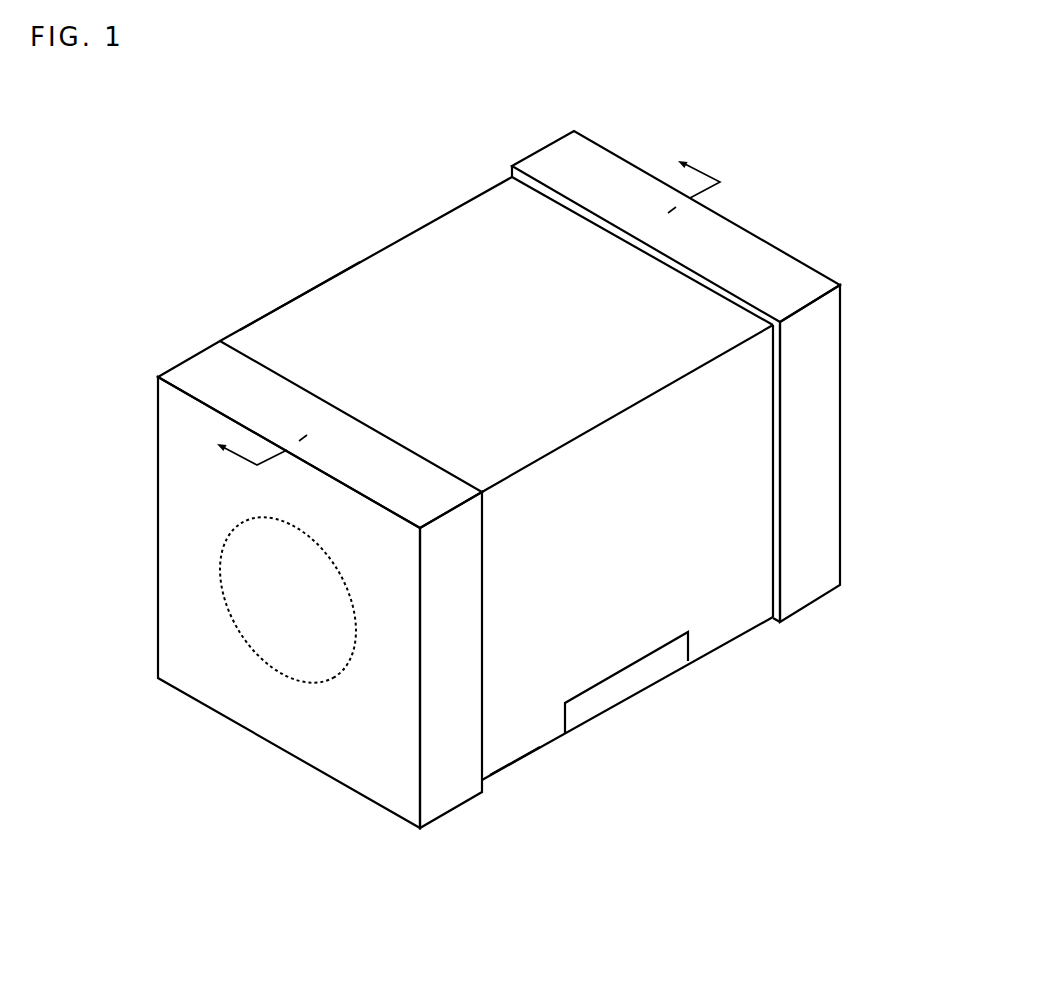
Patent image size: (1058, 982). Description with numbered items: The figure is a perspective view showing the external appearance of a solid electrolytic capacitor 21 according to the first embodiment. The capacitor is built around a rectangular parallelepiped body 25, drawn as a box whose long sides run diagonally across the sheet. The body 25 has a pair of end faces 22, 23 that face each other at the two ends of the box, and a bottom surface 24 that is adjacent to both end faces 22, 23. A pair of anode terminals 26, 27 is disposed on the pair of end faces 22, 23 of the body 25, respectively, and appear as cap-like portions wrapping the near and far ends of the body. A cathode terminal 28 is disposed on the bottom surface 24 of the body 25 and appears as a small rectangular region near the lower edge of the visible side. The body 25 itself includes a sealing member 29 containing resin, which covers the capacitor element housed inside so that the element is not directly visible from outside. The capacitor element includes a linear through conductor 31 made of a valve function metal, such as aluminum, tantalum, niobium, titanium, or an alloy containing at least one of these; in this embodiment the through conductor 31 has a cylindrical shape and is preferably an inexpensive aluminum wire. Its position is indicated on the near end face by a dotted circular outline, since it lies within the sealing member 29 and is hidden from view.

The solid electrolytic capacitor 21 is at (316, 150).
The end face 22 is at (380, 715).
The end face 23 is at (810, 375).
The bottom surface 24 is at (515, 737).
The body 25 is at (334, 277).
The anode terminal 26 is at (197, 685).
The anode terminal 27 is at (715, 376).
The cathode terminal 28 is at (632, 690).
The sealing member 29 is at (268, 327).
The through conductor 31 is at (216, 546).